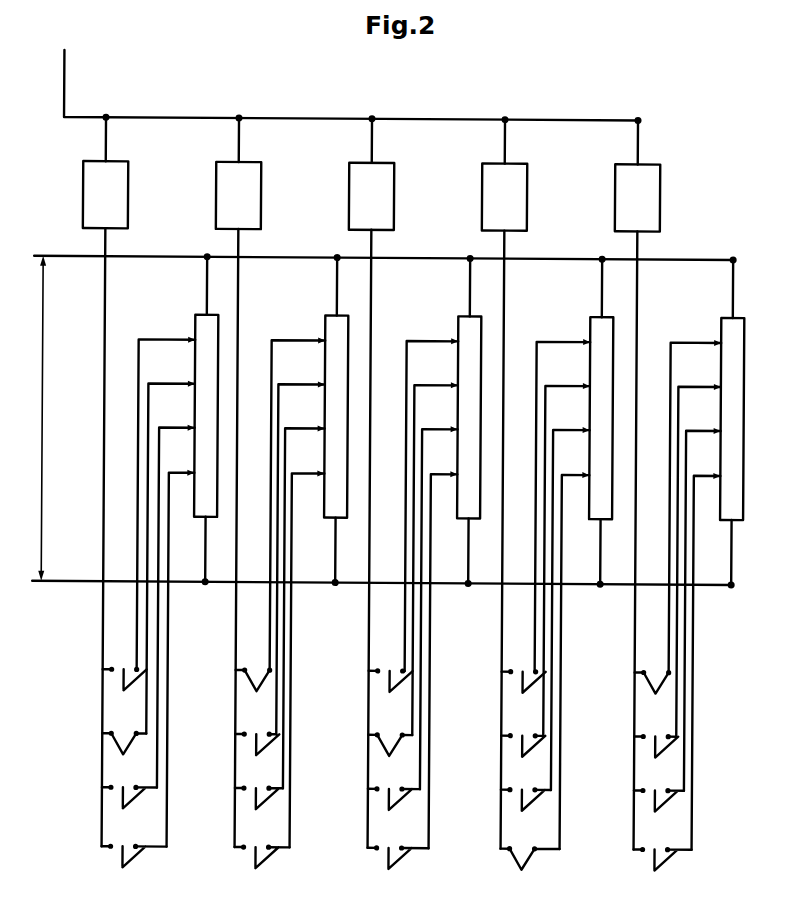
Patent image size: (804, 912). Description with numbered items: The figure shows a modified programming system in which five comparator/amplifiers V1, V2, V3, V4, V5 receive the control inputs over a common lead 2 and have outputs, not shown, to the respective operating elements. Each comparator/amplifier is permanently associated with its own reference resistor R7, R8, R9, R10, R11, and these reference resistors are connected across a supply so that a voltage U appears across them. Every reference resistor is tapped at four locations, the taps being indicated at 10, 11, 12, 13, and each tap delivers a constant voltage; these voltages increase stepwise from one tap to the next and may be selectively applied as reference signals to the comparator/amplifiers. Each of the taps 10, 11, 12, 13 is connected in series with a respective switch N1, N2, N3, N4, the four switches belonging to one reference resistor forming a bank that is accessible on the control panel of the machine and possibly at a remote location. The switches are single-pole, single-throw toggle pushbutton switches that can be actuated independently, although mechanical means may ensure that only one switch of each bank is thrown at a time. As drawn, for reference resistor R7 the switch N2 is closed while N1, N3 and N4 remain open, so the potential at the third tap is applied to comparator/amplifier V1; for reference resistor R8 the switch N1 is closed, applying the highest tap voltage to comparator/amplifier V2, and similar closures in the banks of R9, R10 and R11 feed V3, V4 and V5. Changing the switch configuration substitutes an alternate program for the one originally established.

The lead 2 is at (67, 80).
The tap 10 is at (177, 340).
The tap 11 is at (177, 384).
The tap 12 is at (177, 428).
The tap 13 is at (177, 473).
The comparator/amplifier V1 is at (103, 481).
The comparator/amplifier V2 is at (236, 482).
The comparator/amplifier V3 is at (369, 483).
The comparator/amplifier V4 is at (502, 483).
The comparator/amplifier V5 is at (635, 484).
The reference resistor R7 is at (206, 419).
The reference resistor R8 is at (336, 420).
The reference resistor R9 is at (469, 420).
The reference resistor R10 is at (601, 421).
The reference resistor R11 is at (732, 422).
The switch N1 is at (120, 683).
The switch N2 is at (88, 753).
The switch N3 is at (120, 793).
The switch N4 is at (120, 852).
The voltage U is at (41, 418).